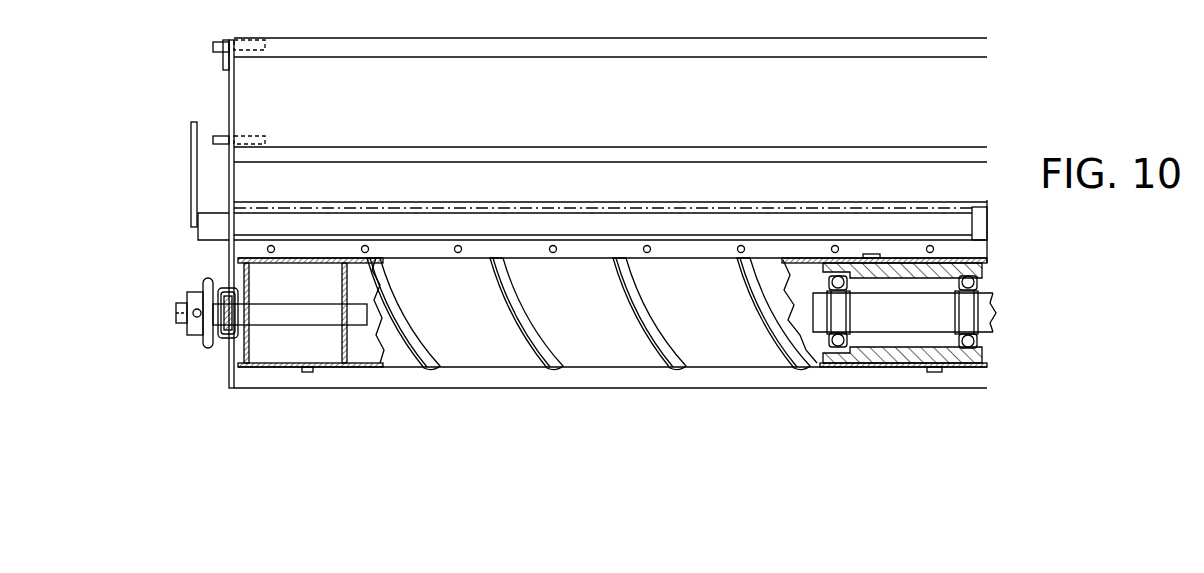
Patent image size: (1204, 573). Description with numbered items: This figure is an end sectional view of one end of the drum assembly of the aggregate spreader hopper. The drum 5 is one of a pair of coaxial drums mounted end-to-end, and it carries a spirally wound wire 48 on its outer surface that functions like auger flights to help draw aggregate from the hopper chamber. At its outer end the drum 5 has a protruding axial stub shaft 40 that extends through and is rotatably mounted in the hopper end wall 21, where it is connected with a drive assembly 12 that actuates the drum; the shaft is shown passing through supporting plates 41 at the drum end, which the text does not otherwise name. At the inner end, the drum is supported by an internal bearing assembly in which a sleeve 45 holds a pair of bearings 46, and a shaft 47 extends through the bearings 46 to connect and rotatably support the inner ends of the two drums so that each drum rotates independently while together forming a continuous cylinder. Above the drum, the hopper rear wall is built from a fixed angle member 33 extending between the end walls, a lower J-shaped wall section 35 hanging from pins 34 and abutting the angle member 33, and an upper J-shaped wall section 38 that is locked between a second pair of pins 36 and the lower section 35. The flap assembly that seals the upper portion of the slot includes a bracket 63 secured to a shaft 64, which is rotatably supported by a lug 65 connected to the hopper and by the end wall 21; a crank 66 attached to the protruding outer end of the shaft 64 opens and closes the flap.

The drum 5 is at (592, 343).
The drive assembly 12 is at (196, 350).
The end wall 21 is at (228, 372).
The fixed angle member 33 is at (600, 205).
The pins 34 is at (218, 136).
The lower J-shaped wall section 35 is at (595, 157).
The second pair of pins 36 is at (215, 42).
The upper J-shaped wall section 38 is at (595, 48).
The stub shaft 40 is at (280, 303).
The bearing housing plates 41 is at (247, 347).
The sleeve 45 is at (897, 353).
The bearings 46 is at (828, 283).
The shaft 47 is at (985, 315).
The spirally wound wire 48 is at (530, 342).
The bracket 63 is at (680, 248).
The shaft 64 is at (215, 238).
The lug 65 is at (978, 212).
The crank 66 is at (188, 152).